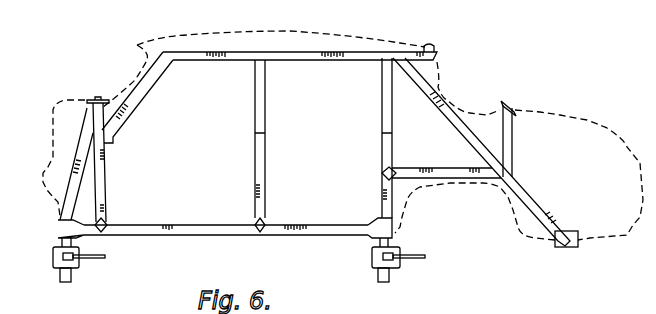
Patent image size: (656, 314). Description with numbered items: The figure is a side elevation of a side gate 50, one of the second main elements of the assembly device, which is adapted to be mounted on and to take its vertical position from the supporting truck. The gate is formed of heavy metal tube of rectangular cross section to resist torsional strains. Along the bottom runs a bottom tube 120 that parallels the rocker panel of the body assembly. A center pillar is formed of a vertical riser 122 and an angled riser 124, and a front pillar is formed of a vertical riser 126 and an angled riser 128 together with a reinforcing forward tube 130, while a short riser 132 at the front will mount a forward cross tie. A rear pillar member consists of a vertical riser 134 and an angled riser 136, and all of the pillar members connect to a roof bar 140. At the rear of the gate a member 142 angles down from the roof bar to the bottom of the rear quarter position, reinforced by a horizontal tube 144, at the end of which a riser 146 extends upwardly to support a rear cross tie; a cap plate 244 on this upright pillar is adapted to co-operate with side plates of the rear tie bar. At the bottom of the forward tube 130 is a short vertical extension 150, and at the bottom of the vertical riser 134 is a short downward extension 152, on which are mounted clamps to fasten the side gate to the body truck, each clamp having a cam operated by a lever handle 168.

The side gate 50 is at (326, 236).
The bottom tube 120 is at (245, 236).
The vertical riser 122 is at (263, 160).
The angled riser 124 is at (262, 113).
The vertical riser 126 is at (104, 162).
The angled riser 128 is at (142, 95).
The reinforcing forward tube 130 is at (80, 193).
The short riser 132 is at (90, 120).
The vertical riser 134 is at (383, 151).
The angled riser 136 is at (383, 97).
The roof bar 140 is at (296, 61).
The angled member 142 is at (484, 152).
The horizontal tube 144 is at (438, 178).
The riser 146 is at (514, 127).
The cap plate 244 is at (508, 106).
The short vertical extension 150 is at (73, 277).
The short downward extension 152 is at (391, 276).
The lever handle 168 is at (106, 257).